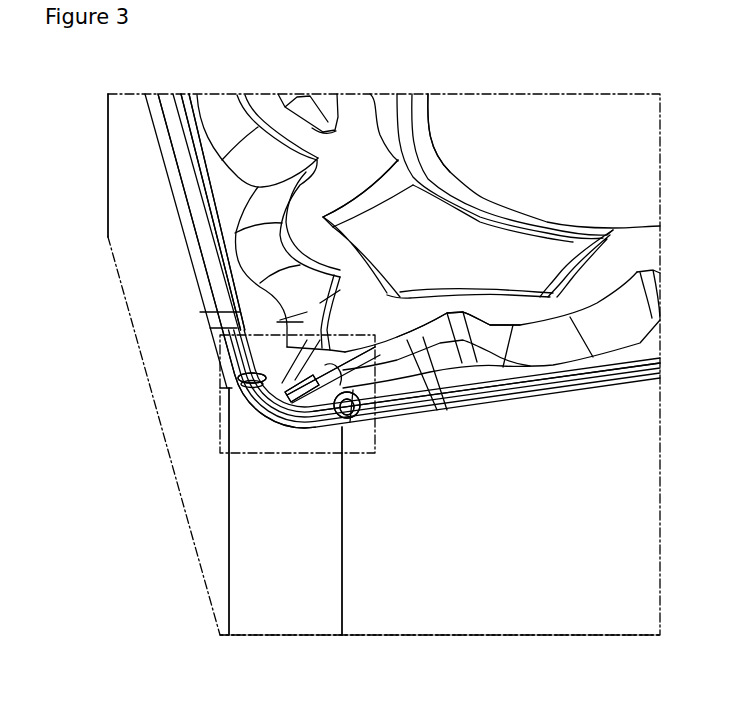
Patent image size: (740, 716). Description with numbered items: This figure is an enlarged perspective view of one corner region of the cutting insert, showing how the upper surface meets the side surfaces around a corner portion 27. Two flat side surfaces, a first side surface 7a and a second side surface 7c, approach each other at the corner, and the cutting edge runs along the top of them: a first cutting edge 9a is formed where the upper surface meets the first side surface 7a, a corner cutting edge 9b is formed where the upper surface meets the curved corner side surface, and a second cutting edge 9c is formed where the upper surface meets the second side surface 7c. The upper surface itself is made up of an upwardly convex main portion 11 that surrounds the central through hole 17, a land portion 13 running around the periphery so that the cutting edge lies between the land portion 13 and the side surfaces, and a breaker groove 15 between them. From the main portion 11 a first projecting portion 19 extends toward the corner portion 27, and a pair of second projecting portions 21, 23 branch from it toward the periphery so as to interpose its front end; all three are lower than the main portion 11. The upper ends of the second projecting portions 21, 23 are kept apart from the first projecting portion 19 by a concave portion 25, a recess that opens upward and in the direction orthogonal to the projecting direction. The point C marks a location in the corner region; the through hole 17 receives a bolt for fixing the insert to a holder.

The first side surface 7a is at (155, 215).
The second side surface 7c is at (580, 612).
The first cutting edge 9a is at (217, 355).
The corner cutting edge 9b is at (273, 442).
The second cutting edge 9c is at (452, 385).
The main portion 11 is at (357, 145).
The land portion 13 is at (207, 282).
The breaker groove 15 is at (487, 375).
The through hole 17 is at (482, 197).
The first projecting portion 19 is at (300, 430).
The second projecting portion 21 is at (408, 425).
The second projecting portion 23 is at (238, 390).
The concave portion 25 is at (288, 408).
The corner portion 27 is at (293, 617).
The center point C is at (350, 420).